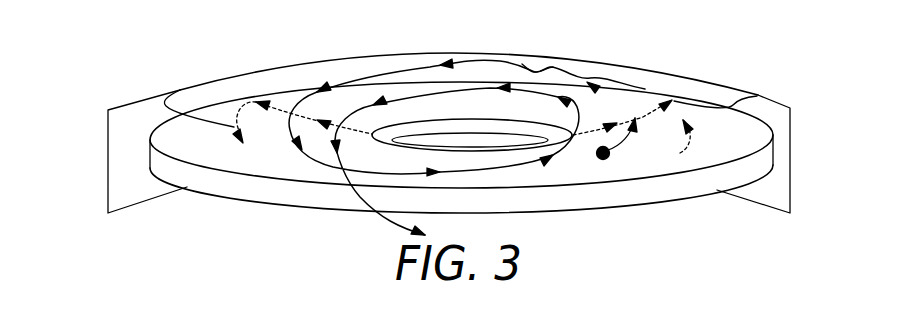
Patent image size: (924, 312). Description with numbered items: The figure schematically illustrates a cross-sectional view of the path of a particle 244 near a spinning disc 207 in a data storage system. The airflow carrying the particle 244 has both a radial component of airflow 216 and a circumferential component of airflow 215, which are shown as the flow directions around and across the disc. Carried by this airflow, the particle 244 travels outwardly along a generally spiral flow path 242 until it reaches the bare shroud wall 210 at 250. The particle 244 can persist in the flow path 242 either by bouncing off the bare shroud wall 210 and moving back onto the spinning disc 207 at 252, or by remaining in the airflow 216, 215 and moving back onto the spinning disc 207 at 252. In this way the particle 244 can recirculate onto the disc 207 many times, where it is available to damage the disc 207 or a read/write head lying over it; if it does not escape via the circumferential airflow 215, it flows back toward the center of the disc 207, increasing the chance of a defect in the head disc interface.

The spinning disc 207 is at (688, 183).
The bare shroud wall 210 is at (711, 92).
The circumferential component of airflow 215 is at (180, 90).
The radial component of airflow 216 is at (283, 113).
The flow path 242 is at (388, 72).
The particle 244 is at (607, 160).
The location where the particle reaches the bare shroud wall 250 is at (536, 72).
The location where the particle moves back onto the spinning disc 252 is at (290, 140).